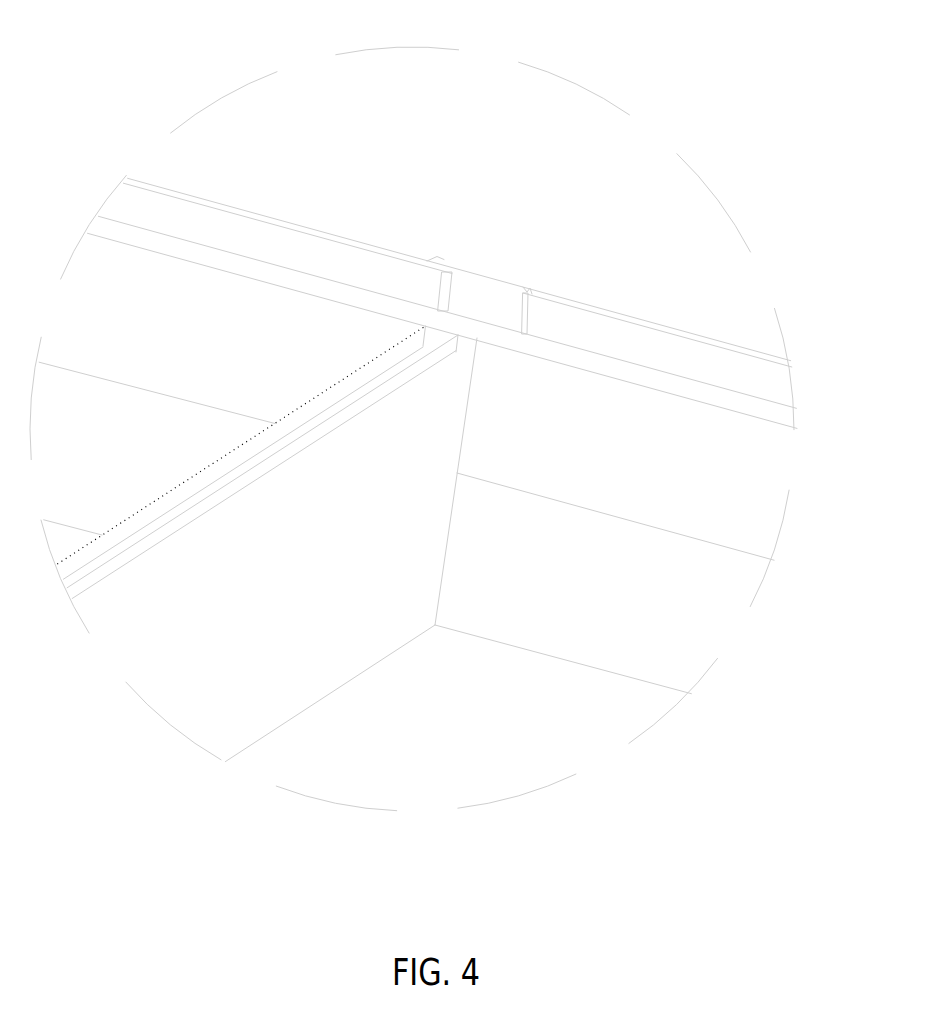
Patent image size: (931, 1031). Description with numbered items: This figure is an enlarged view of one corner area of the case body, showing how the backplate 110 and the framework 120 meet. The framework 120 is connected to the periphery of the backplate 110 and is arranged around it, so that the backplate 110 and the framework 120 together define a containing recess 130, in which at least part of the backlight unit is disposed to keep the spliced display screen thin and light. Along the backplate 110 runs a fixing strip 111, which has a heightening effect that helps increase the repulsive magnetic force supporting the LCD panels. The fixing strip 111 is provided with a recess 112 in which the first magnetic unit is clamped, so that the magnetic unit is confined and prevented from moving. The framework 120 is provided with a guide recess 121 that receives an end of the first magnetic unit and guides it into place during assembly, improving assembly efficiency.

The backplate 110 is at (437, 778).
The fixing strip 111 is at (180, 695).
The recess 112 is at (297, 408).
The framework 120 is at (713, 623).
The guide recess 121 is at (489, 281).
The containing recess 130 is at (583, 735).